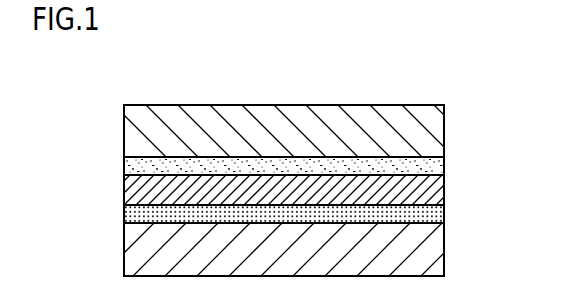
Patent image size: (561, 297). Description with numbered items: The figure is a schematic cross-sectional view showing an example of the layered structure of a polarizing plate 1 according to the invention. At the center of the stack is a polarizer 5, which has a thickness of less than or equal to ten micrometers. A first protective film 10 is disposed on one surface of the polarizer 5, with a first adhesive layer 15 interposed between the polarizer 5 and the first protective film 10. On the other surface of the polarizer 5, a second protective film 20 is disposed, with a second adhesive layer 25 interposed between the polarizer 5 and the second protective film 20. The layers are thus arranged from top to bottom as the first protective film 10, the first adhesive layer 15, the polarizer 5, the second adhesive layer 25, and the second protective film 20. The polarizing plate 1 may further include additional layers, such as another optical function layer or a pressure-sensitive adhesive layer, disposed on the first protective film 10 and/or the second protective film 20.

The polarizing plate 1 is at (457, 79).
The first protective film 10 is at (432, 136).
The first adhesive layer 15 is at (430, 169).
The polarizer 5 is at (432, 191).
The second adhesive layer 25 is at (432, 218).
The second protective film 20 is at (430, 251).